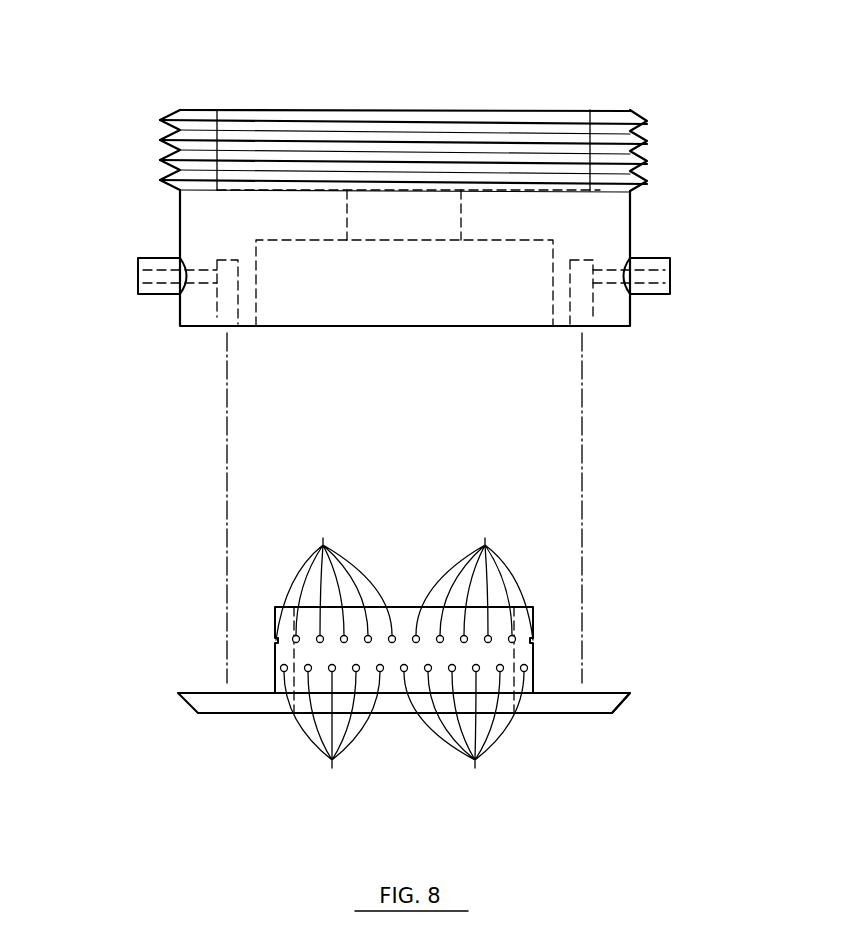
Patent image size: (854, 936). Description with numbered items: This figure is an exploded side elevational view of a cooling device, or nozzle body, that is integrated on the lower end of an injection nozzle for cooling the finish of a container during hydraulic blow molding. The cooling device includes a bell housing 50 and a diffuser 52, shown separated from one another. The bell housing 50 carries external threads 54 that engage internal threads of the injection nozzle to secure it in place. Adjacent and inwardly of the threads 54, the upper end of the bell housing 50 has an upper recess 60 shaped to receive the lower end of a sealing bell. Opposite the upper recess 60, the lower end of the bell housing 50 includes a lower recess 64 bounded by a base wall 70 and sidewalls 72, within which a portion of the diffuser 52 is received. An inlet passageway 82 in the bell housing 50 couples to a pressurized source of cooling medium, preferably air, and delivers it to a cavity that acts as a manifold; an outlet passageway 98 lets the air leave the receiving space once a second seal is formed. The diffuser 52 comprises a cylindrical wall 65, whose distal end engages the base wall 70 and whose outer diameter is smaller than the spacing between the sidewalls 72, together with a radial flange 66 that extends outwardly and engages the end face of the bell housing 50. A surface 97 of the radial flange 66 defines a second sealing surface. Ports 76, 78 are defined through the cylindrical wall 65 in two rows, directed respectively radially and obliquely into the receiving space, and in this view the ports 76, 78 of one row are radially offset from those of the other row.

The bell housing 50 is at (148, 233).
The diffuser 52 is at (352, 656).
The external threads 54 is at (647, 133).
The upper recess 60 is at (246, 152).
The lower recess 64 is at (460, 215).
The cylindrical wall 65 is at (533, 615).
The radial flange 66 is at (237, 700).
The base wall 70 is at (318, 240).
The sidewalls 72 is at (256, 302).
The ports 76 is at (404, 580).
The ports 78 is at (404, 730).
The inlet passageway 82 is at (603, 267).
The surface 97 is at (583, 713).
The outlet passageway 98 is at (180, 302).